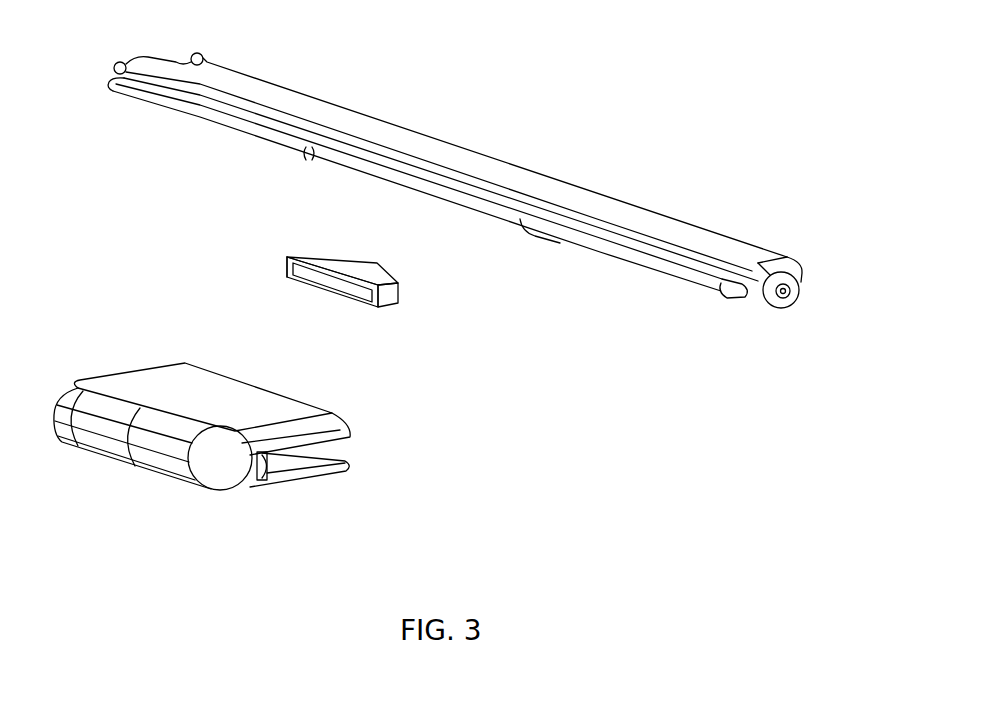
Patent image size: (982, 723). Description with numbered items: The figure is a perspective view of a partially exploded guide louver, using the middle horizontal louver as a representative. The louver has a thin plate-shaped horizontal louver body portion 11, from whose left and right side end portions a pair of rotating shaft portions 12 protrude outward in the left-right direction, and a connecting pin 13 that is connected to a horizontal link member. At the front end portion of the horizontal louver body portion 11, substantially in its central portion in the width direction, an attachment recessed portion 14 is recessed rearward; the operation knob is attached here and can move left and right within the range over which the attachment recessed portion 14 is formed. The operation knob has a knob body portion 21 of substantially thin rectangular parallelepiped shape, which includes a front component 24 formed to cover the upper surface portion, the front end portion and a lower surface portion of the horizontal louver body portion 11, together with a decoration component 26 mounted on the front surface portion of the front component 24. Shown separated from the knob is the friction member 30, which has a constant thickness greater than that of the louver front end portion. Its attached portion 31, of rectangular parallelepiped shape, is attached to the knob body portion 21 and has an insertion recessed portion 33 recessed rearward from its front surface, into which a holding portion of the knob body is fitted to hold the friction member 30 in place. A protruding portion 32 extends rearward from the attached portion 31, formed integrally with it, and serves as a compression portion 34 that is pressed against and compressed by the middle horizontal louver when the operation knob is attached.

The horizontal louver body portion 11 is at (690, 238).
The rotating shaft portion 12 is at (114, 64).
The connecting pin 13 is at (190, 55).
The attachment recessed portion 14 is at (335, 158).
The knob body portion 21 is at (202, 420).
The front component 24 is at (202, 420).
The decoration component 26 is at (160, 455).
The friction member 30 is at (365, 309).
The attached portion 31 is at (288, 279).
The protruding portion 32 is at (390, 271).
The insertion recessed portion 33 is at (342, 291).
The compression portion 34 is at (432, 280).